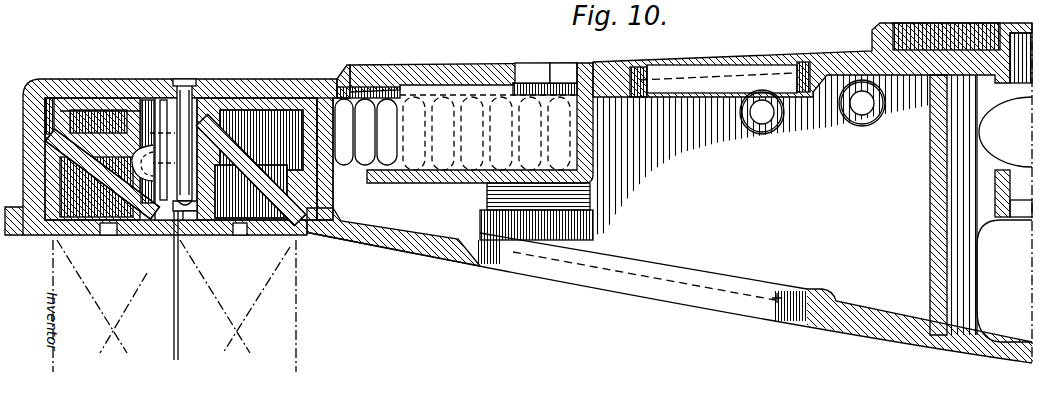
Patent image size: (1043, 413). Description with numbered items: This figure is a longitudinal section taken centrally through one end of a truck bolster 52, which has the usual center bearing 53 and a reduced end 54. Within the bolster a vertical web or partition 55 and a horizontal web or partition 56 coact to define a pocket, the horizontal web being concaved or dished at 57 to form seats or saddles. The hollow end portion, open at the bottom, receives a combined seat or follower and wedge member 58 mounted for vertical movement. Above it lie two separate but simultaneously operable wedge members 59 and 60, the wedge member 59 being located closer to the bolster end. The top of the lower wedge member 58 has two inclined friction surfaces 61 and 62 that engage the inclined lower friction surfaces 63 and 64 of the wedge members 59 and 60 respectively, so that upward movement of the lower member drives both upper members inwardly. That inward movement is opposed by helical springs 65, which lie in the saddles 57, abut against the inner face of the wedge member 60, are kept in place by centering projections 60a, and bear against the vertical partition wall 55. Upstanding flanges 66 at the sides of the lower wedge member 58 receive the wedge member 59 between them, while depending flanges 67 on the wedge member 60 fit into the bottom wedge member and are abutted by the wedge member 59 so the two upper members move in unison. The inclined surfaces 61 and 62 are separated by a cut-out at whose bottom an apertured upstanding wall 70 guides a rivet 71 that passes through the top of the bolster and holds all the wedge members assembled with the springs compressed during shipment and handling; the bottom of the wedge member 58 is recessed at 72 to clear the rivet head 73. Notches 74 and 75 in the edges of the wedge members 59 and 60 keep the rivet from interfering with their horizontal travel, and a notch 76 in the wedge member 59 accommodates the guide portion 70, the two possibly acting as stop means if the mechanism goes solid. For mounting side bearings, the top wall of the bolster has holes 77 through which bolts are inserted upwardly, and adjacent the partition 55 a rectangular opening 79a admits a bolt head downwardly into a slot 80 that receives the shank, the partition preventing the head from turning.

The bolster 52 is at (749, 312).
The center bearing 53 is at (930, 28).
The reduced end 54 is at (47, 80).
The vertical web or partition 55 is at (594, 168).
The horizontal web or partition 56 is at (447, 193).
The seats or saddles 57 is at (588, 215).
The combined seat or follower and wedge member 58 is at (143, 240).
The wedge member 59 is at (125, 98).
The wedge member 60 is at (315, 100).
The centering projections 60a is at (341, 78).
The inclined friction surface 61 is at (75, 152).
The inclined friction surface 62 is at (262, 236).
The inclined lower friction surface 63 is at (70, 99).
The inclined lower friction surface 64 is at (243, 110).
The springs 65 is at (338, 228).
The upstanding flanges 66 is at (115, 98).
The depending flanges 67 is at (179, 97).
The upstanding wall 70 is at (154, 168).
The rivet 71 is at (191, 79).
The recess 72 is at (185, 243).
The head 73 is at (170, 241).
The notch 74 is at (147, 99).
The notch 75 is at (215, 97).
The notch 76 is at (119, 240).
The holes 77 is at (385, 63).
The rectangular opening 79a is at (527, 72).
The slot 80 is at (558, 72).